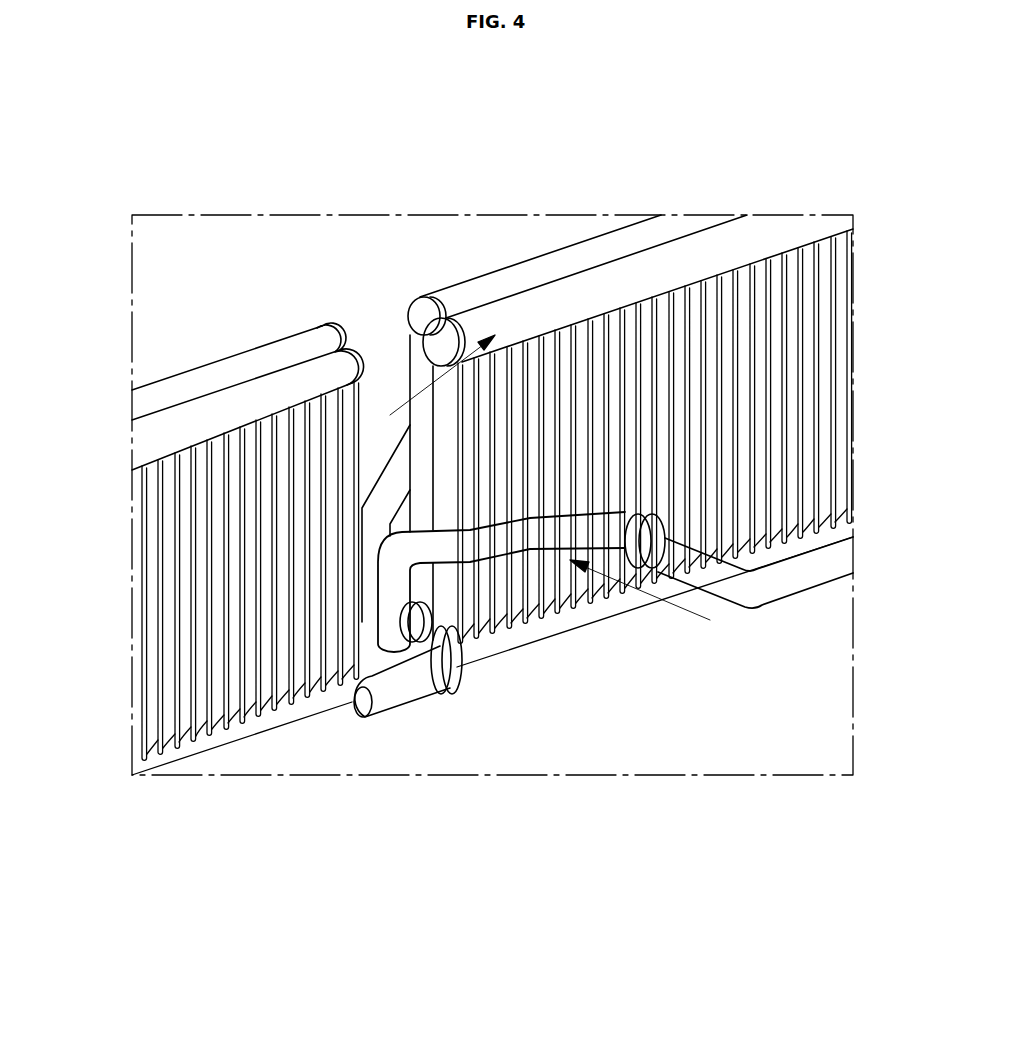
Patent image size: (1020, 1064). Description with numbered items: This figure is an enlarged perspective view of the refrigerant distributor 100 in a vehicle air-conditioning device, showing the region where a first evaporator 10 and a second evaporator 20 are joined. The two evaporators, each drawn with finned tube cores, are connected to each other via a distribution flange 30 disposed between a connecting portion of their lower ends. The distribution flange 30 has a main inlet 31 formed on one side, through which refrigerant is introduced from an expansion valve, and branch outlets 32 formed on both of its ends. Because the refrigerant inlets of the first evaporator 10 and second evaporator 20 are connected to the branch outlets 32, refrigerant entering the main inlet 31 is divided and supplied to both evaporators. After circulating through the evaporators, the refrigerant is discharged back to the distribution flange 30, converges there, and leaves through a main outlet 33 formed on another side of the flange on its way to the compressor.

The refrigerant distributor 100 is at (478, 740).
The first evaporator 10 is at (514, 232).
The second evaporator 20 is at (221, 296).
The distribution flange 30 is at (546, 658).
The main inlet 31 is at (440, 692).
The branch outlets 32 is at (375, 600).
The main outlet 33 is at (356, 700).